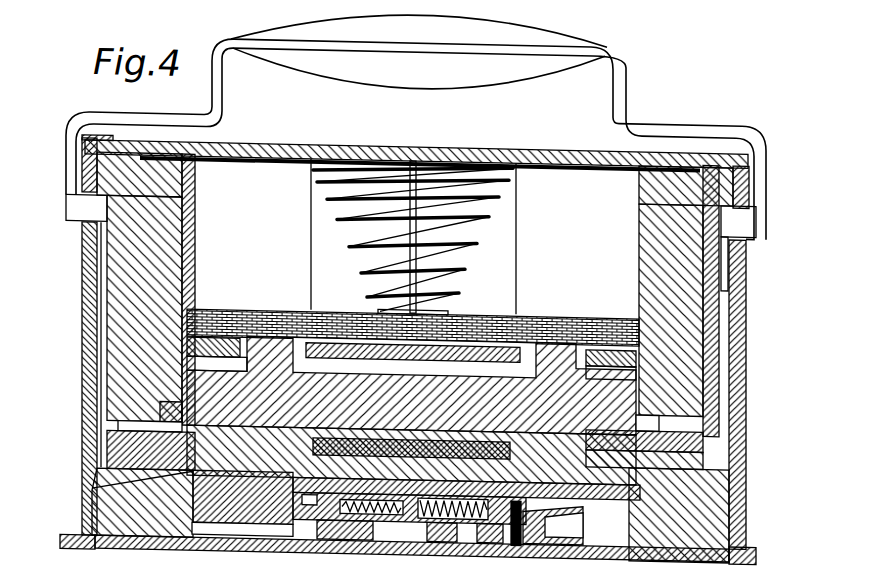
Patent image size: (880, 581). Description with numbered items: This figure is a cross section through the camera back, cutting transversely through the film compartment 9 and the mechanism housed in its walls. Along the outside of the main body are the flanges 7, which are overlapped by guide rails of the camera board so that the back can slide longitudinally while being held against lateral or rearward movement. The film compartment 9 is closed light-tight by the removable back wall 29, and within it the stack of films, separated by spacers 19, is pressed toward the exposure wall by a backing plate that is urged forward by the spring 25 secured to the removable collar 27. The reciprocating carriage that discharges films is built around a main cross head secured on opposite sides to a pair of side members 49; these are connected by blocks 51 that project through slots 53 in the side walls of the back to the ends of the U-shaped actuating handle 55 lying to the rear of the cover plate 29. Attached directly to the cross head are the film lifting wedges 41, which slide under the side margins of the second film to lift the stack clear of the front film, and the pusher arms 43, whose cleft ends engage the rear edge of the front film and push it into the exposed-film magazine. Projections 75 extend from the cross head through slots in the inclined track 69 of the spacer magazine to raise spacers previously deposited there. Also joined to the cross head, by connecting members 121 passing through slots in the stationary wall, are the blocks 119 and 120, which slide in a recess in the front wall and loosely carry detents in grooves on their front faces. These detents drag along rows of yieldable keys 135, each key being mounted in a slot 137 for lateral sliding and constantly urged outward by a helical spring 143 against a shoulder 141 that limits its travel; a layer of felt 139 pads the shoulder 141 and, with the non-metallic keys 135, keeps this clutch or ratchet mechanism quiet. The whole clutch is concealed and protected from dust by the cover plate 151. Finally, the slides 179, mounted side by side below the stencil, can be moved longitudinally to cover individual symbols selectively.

The flanges 7 is at (75, 533).
The film compartment 9 is at (584, 167).
The spacers 19 is at (558, 304).
The spring 25 is at (500, 212).
The removable collar 27 is at (540, 152).
The removable back wall 29 is at (482, 136).
The film lifting wedges 41 is at (168, 408).
The pusher arms 43 is at (125, 449).
The side members 49 is at (110, 311).
The blocks 51 is at (82, 203).
The slots 53 is at (82, 171).
The U-shaped actuating handle 55 is at (432, 79).
The inclined track 69 is at (222, 304).
The projections 75 is at (282, 304).
The block 119 is at (565, 526).
The block 120 is at (242, 531).
The connecting members 121 is at (95, 486).
The keys 135 is at (479, 533).
The slots 137 is at (424, 533).
The layer of felt 139 is at (306, 533).
The shoulder 141 is at (521, 534).
The helical spring 143 is at (371, 533).
The cover plate 151 is at (598, 533).
The slides 179 is at (437, 410).